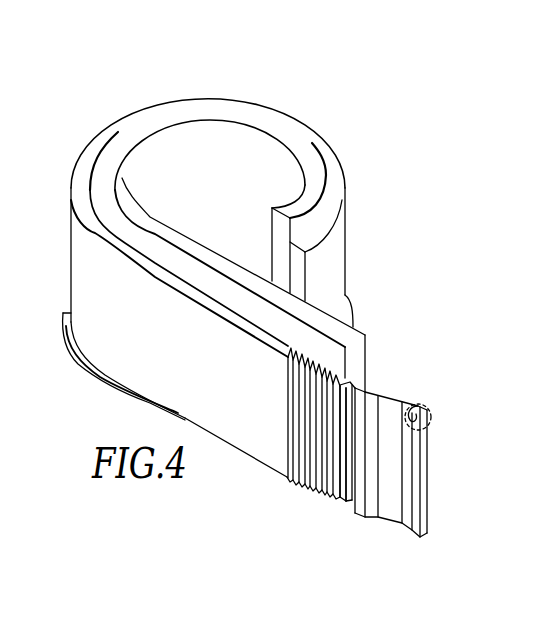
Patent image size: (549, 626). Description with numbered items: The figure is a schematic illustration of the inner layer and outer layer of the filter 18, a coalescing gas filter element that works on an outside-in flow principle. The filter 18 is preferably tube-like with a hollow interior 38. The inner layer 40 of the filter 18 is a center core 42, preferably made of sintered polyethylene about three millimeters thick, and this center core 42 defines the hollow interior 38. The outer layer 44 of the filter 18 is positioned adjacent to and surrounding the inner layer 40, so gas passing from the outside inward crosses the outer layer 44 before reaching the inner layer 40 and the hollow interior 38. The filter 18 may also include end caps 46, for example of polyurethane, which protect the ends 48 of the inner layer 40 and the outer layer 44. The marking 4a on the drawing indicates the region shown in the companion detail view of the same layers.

The filter 18 is at (224, 280).
The hollow interior 38 is at (208, 195).
The inner layer 40 is at (218, 165).
The center core 42 is at (278, 121).
The outer layer 44 is at (334, 183).
The end caps 46 is at (63, 313).
The ends 48 is at (120, 137).
The detail region 4a is at (430, 413).